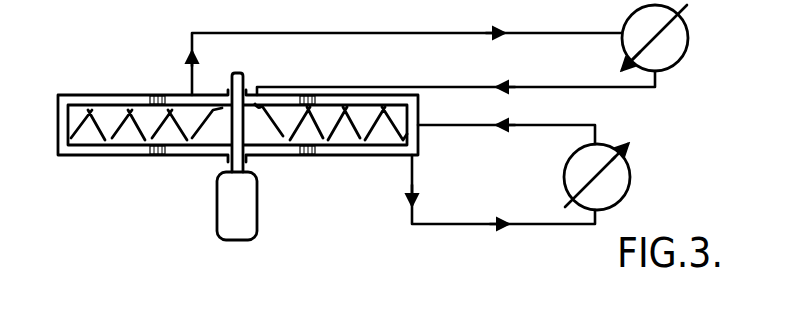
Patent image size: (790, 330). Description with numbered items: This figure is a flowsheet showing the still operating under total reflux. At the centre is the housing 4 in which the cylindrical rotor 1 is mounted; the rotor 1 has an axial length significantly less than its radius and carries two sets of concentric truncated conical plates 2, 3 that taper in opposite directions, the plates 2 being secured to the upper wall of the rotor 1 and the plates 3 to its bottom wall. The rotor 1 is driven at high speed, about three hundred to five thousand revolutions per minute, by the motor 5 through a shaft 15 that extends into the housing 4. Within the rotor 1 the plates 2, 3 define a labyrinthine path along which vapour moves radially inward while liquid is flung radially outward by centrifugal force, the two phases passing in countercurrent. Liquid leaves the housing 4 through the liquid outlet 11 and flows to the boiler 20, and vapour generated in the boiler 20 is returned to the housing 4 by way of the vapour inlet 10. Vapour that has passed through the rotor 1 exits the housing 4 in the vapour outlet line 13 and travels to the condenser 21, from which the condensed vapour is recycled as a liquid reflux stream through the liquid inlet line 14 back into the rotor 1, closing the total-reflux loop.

The rotor 1 is at (131, 147).
The plates 2 is at (346, 128).
The plates 3 is at (177, 104).
The housing 4 is at (82, 157).
The motor 5 is at (237, 206).
The vapour inlet 10 is at (540, 125).
The liquid outlet 11 is at (410, 185).
The vapour outlet line 13 is at (283, 36).
The liquid inlet line 14 is at (400, 85).
The shaft 15 is at (240, 71).
The boiler 20 is at (632, 172).
The condenser 21 is at (677, 70).